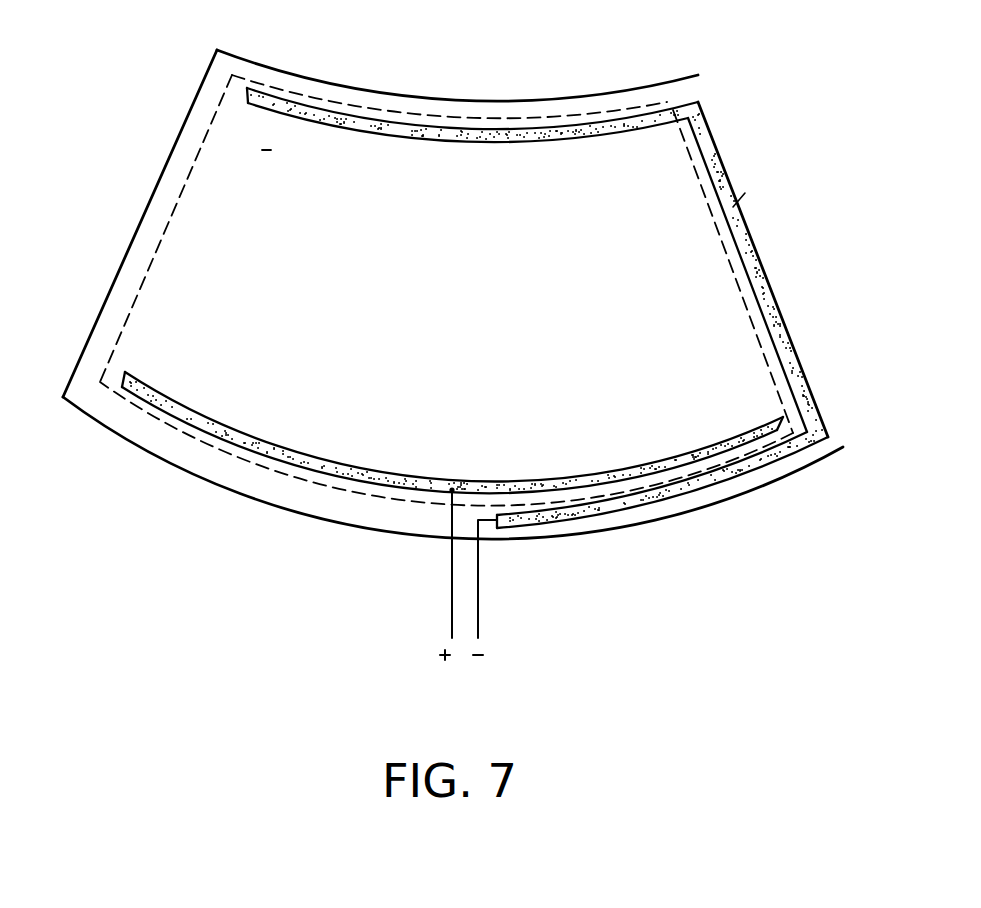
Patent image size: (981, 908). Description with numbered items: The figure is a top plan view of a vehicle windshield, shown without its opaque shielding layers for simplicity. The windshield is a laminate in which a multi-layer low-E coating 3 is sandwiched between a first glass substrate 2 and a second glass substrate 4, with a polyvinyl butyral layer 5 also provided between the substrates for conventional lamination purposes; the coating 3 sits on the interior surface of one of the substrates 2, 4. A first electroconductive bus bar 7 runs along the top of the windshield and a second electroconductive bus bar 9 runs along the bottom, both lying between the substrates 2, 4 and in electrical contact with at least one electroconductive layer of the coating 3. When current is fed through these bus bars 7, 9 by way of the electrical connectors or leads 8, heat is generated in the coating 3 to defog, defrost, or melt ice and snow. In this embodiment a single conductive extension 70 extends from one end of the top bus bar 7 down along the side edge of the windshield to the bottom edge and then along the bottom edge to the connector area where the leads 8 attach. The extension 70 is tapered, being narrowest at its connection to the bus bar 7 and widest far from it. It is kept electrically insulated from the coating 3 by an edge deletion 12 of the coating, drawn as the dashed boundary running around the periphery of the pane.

The first glass substrate 2 is at (165, 313).
The multi-layer low-E coating 3 is at (200, 242).
The second glass substrate 4 is at (453, 294).
The polyvinyl butyral (PVB) layer 5 is at (260, 148).
The first electroconductive bus bar 7 is at (533, 132).
The electrical connectors/leads 8 is at (478, 605).
The second electroconductive bus bar 9 is at (295, 462).
The edge deletion 12 is at (365, 108).
The conductive extension 70 is at (693, 508).